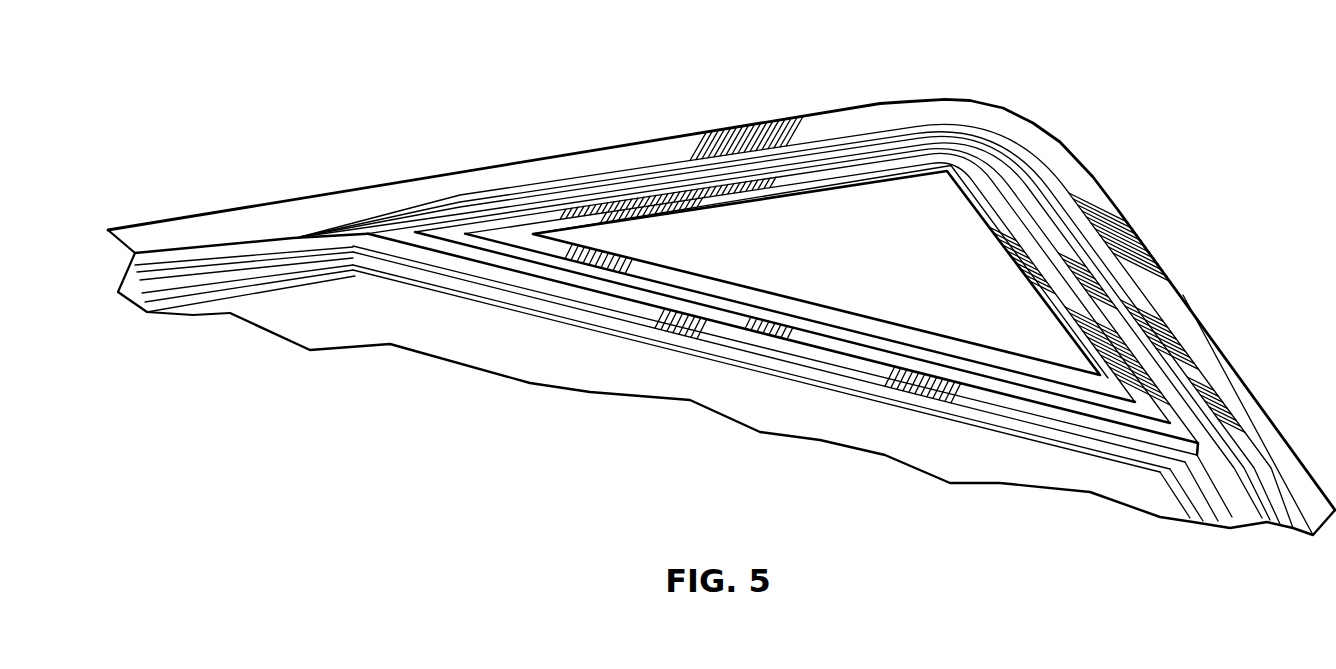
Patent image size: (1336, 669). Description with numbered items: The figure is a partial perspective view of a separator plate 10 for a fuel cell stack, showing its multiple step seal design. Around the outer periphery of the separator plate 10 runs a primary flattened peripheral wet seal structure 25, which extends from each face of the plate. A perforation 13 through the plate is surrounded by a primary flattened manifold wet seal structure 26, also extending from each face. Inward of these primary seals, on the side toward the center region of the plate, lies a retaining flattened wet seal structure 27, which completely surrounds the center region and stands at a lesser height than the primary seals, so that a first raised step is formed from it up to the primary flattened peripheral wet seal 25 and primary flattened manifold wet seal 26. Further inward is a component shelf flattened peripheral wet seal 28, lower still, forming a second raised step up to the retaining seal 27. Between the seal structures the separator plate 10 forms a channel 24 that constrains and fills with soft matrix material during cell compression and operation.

The separator plate 10 is at (532, 162).
The perforation 13 is at (897, 205).
The channel 24 is at (688, 178).
The primary flattened peripheral wet seal structure 25 is at (247, 232).
The primary flattened manifold wet seal structure 26 is at (810, 328).
The retaining flattened wet seal structure 27 is at (306, 243).
The component shelf flattened peripheral wet seal 28 is at (495, 282).